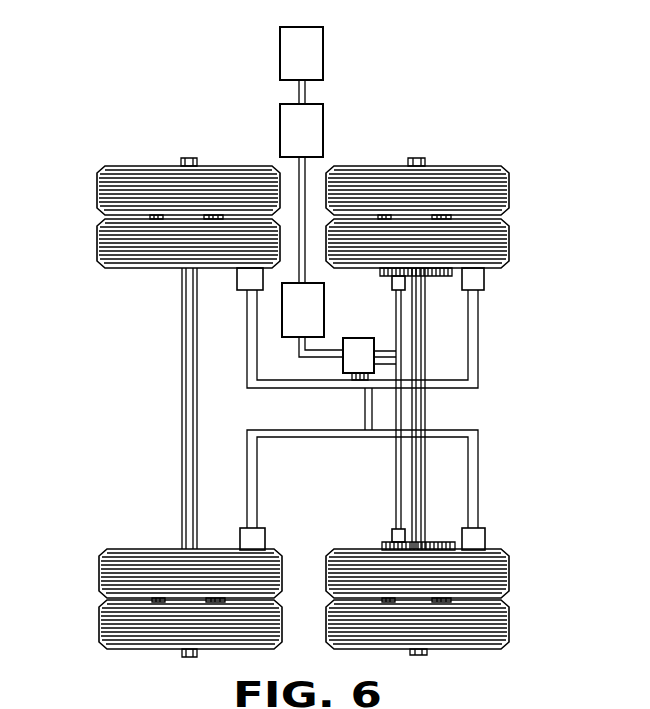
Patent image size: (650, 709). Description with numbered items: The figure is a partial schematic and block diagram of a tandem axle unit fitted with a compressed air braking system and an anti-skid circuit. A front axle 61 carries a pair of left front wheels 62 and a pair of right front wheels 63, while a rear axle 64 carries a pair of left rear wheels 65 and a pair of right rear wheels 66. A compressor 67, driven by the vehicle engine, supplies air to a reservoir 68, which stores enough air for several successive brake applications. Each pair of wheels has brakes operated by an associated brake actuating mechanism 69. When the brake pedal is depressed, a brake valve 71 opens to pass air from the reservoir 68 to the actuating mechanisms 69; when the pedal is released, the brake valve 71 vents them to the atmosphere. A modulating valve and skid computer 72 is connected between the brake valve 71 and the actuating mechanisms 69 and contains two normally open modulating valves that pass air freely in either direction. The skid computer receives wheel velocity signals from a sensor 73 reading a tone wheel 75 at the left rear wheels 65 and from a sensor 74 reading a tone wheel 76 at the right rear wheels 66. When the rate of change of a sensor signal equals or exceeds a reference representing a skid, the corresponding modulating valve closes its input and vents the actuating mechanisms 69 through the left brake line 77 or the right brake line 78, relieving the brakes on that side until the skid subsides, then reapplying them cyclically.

The front axle 61 is at (182, 422).
The left front wheels 62 is at (100, 610).
The right front wheels 63 is at (97, 230).
The rear axle 64 is at (425, 409).
The left rear wheels 65 is at (508, 612).
The right rear wheels 66 is at (508, 233).
The compressor 67 is at (312, 62).
The reservoir 68 is at (312, 139).
The brake actuating mechanism 69 is at (243, 278).
The brake valve 71 is at (314, 319).
The modulating valve and skid computer 72 is at (369, 365).
The sensor 73 is at (392, 533).
The sensor 74 is at (394, 283).
The tone wheel 75 is at (436, 542).
The tone wheel 76 is at (436, 276).
The left brake line 77 is at (366, 413).
The right brake line 78 is at (352, 377).